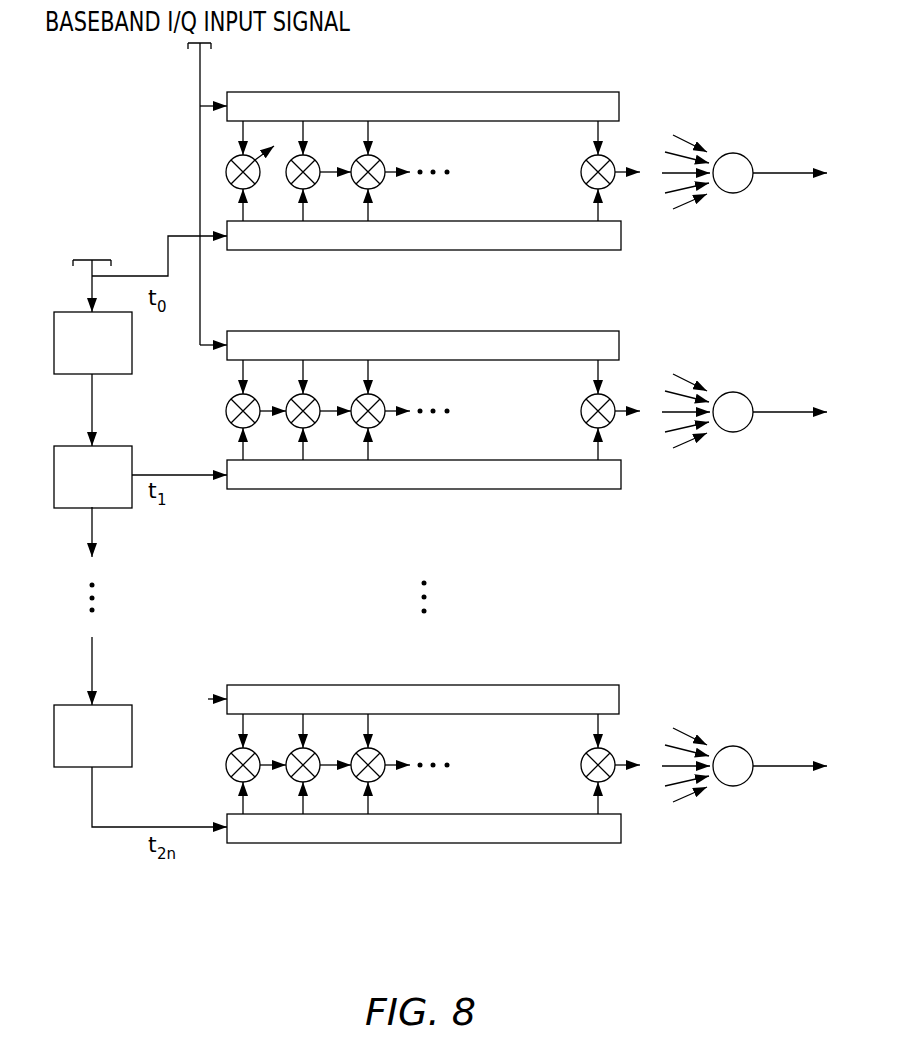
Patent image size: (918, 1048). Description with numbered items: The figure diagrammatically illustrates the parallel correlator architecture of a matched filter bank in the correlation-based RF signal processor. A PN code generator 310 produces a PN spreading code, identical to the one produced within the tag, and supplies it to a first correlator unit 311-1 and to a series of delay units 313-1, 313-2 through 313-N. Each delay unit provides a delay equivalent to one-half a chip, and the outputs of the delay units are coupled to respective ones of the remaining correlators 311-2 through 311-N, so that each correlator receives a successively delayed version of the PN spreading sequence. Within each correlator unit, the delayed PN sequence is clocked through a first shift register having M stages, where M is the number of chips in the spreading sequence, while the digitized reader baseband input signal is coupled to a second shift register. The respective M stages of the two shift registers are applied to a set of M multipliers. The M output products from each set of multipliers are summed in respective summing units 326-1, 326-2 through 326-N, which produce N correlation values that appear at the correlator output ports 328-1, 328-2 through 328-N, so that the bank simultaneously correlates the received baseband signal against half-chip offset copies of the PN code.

The PN code generator 310 is at (139, 258).
The first correlator unit 311-1 is at (563, 73).
The correlator unit 311-2 is at (563, 286).
The correlator unit 311-N is at (532, 799).
The delay unit 313-1 is at (54, 330).
The delay unit 313-2 is at (54, 463).
The delay unit 313-N is at (54, 722).
The summing unit 326-1 is at (735, 153).
The summing unit 326-2 is at (708, 406).
The summing unit 326-N is at (709, 760).
The correlator output port 328-1 is at (783, 178).
The correlator output port 328-2 is at (804, 413).
The correlator output port 328-N is at (804, 767).